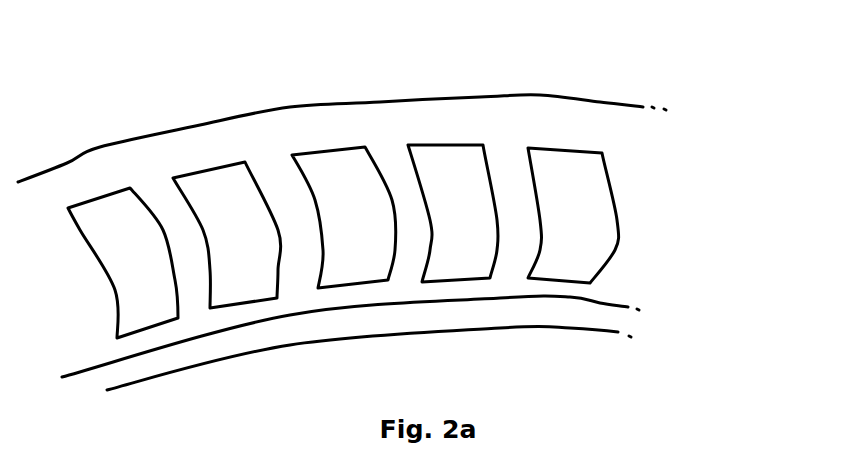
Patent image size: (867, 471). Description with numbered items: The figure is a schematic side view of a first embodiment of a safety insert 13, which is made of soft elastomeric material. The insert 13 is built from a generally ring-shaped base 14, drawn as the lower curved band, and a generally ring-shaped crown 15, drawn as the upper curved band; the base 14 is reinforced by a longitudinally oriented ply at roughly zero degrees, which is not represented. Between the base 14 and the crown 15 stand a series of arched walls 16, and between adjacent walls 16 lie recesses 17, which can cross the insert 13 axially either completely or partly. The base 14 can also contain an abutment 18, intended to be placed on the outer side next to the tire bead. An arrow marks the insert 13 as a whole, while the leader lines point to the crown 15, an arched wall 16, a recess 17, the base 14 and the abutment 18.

The insert 13 is at (647, 200).
The base 14 is at (515, 288).
The crown 15 is at (518, 112).
The arched walls 16 is at (167, 220).
The recesses 17 is at (342, 192).
The abutment 18 is at (277, 330).